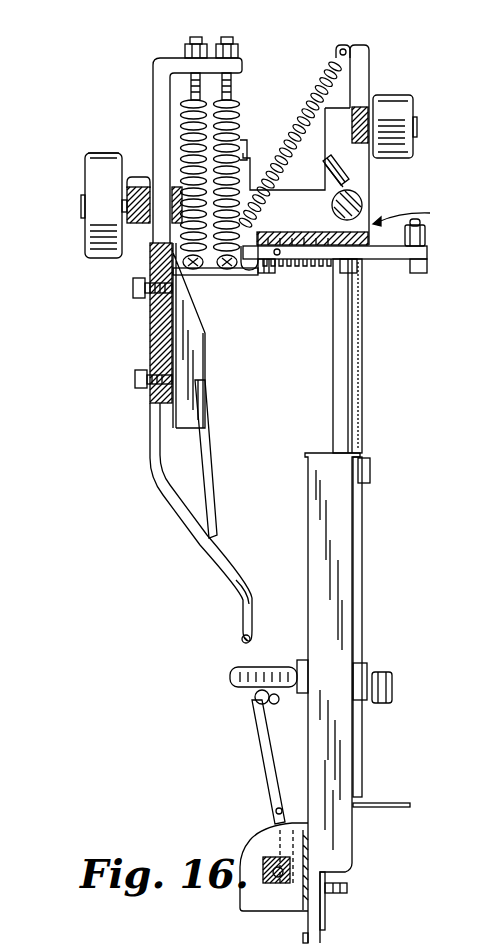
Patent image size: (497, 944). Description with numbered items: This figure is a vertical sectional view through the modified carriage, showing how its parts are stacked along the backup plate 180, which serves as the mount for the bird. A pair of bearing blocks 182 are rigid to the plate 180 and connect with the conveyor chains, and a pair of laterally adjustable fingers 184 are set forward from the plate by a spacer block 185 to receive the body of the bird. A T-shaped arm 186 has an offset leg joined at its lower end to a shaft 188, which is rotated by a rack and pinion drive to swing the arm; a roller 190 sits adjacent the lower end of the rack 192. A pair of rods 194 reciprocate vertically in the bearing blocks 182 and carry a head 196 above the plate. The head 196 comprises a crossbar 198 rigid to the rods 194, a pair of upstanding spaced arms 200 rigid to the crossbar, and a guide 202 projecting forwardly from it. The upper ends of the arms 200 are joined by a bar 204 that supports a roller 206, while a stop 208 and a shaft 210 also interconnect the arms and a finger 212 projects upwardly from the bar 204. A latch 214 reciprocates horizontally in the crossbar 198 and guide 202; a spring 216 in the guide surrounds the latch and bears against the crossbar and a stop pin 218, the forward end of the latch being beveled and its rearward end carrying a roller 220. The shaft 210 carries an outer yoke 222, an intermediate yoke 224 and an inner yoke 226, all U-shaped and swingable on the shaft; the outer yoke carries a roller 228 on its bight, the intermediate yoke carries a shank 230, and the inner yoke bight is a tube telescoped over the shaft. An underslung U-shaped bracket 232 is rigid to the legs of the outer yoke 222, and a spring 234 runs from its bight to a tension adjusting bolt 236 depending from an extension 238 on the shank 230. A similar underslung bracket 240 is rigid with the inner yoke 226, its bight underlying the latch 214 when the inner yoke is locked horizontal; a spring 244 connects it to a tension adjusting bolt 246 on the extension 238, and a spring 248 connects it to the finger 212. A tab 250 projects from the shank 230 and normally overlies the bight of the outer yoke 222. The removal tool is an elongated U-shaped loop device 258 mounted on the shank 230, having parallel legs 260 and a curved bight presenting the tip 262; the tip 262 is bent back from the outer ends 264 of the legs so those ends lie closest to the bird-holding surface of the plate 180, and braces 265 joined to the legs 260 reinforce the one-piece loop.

The backup plate 180 is at (308, 525).
The bearing blocks 182 is at (371, 473).
The laterally adjustable fingers 184 is at (229, 677).
The spacer block 185 is at (302, 698).
The T-shaped arm 186 is at (268, 780).
The shaft 188 is at (278, 884).
The roller 190 is at (347, 892).
The rack 192 is at (328, 917).
The rods 194 is at (363, 340).
The head 196 is at (418, 215).
The crossbar 198 is at (378, 260).
The upstanding spaced arms 200 is at (370, 168).
The guide 202 is at (308, 231).
The bar 204 is at (358, 105).
The roller 206 is at (411, 103).
The stop 208 is at (326, 176).
The shaft 210 is at (370, 212).
The finger 212 is at (371, 47).
The latch 214 is at (257, 277).
The spring 216 is at (309, 268).
The stop pin 218 is at (282, 274).
The roller 220 is at (427, 240).
The outer yoke 222 is at (100, 250).
The intermediate yoke 224 is at (140, 243).
The inner yoke 226 is at (288, 195).
The roller 228 is at (100, 152).
The shank 230 is at (158, 75).
The U-shaped bracket 232 is at (150, 313).
The spring 234 is at (184, 110).
The tension adjusting bolt 236 is at (195, 37).
The extension 238 is at (243, 65).
The U-shaped bracket 240 is at (244, 272).
The spring 244 is at (240, 110).
The tension adjusting bolt 246 is at (232, 37).
The spring 248 is at (328, 62).
The tab 250 is at (127, 184).
The U-shaped loop device 258 is at (150, 477).
The legs 260 is at (190, 533).
The tip 262 is at (241, 640).
The outer ends 264 is at (262, 614).
The braces 265 is at (208, 456).